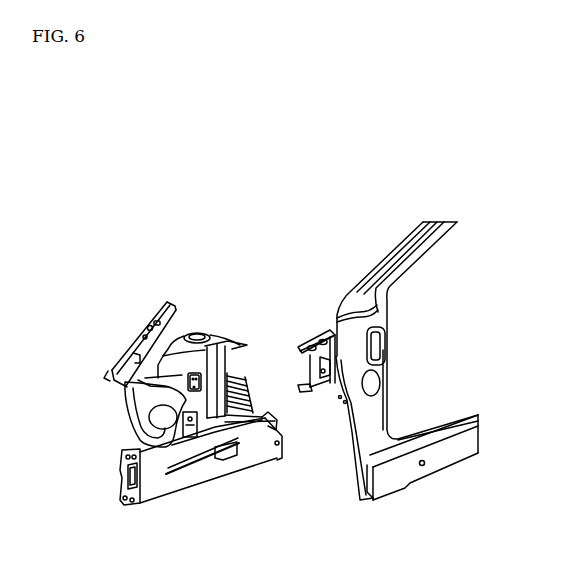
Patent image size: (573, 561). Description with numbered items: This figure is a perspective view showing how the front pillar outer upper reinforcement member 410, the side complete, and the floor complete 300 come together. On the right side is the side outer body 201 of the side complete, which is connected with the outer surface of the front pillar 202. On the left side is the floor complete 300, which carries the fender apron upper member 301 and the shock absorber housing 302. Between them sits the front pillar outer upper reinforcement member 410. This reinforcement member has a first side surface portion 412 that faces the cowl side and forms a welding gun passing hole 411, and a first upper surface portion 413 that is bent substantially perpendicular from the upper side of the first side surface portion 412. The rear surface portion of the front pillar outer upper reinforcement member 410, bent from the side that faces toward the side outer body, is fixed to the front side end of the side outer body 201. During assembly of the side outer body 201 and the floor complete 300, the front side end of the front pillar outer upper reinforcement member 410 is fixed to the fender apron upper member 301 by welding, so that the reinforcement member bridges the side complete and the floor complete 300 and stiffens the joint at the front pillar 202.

The floor complete 300 is at (124, 423).
The fender apron upper member 301 is at (156, 318).
The shock absorber housing 302 is at (207, 330).
The front pillar outer upper reinforcement member 410 is at (299, 336).
The welding gun passing hole 411 is at (329, 382).
The first side surface portion 412 is at (312, 368).
The first upper surface portion 413 is at (312, 328).
The front pillar 202 is at (376, 262).
The side outer body 201 is at (399, 347).